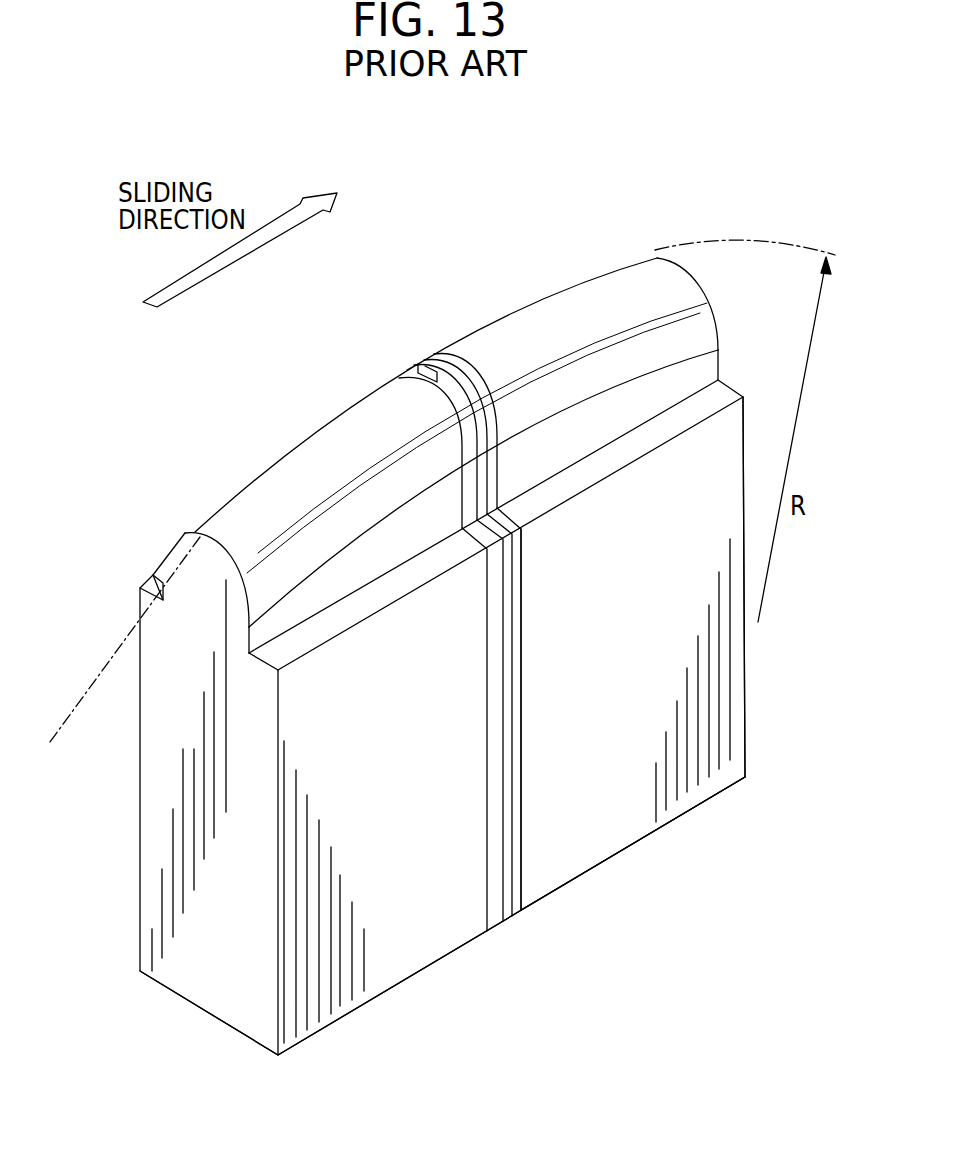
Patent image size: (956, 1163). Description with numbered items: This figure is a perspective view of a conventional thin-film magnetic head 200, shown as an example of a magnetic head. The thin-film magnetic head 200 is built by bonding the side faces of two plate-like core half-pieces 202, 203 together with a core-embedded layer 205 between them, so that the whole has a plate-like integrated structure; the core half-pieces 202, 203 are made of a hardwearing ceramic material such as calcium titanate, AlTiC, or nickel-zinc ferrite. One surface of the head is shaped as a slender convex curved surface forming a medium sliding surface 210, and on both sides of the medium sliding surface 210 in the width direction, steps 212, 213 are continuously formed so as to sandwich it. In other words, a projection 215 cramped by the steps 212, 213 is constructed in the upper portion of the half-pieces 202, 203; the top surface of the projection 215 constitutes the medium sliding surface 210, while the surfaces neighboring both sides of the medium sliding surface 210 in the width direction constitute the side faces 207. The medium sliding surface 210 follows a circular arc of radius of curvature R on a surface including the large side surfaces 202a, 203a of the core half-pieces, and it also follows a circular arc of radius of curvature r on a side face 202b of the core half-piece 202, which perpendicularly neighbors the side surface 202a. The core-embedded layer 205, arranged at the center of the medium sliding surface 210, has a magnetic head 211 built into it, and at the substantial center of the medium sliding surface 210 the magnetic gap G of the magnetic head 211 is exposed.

The thin-film magnetic head 200 is at (702, 215).
The core half-piece 202 is at (208, 983).
The large side surface 202a is at (382, 944).
The side face 202b is at (158, 801).
The core half-piece 203 is at (709, 725).
The large side surface 203a is at (567, 781).
The core-embedded layer 205 is at (497, 930).
The side face 207 is at (706, 366).
The medium sliding surface 210 is at (573, 298).
The magnetic head 211 is at (451, 362).
The step 212 is at (333, 622).
The step 213 is at (160, 578).
The projection 215 is at (300, 488).